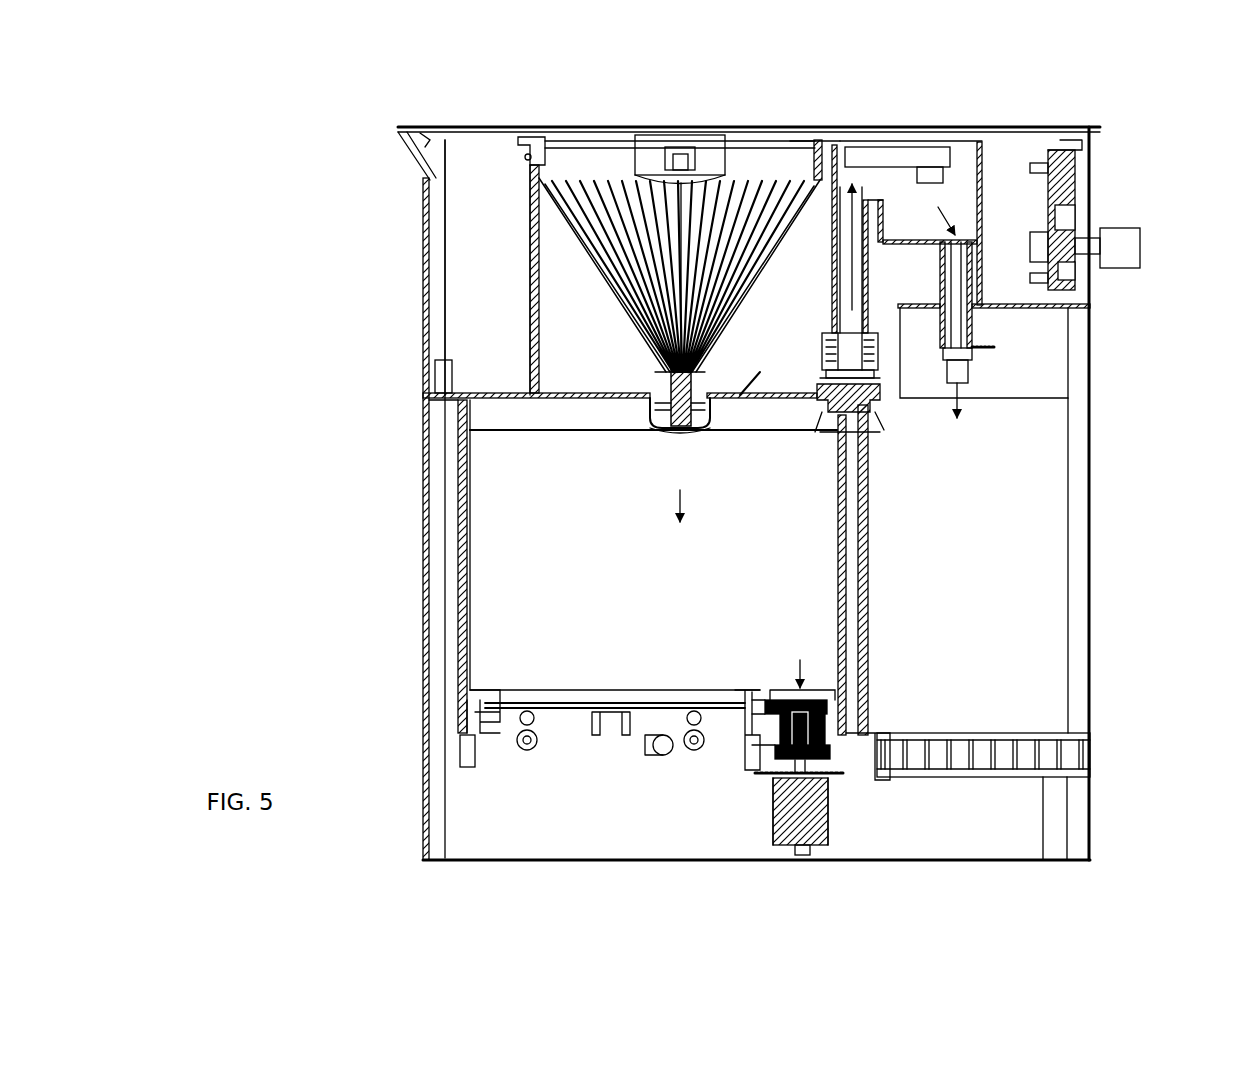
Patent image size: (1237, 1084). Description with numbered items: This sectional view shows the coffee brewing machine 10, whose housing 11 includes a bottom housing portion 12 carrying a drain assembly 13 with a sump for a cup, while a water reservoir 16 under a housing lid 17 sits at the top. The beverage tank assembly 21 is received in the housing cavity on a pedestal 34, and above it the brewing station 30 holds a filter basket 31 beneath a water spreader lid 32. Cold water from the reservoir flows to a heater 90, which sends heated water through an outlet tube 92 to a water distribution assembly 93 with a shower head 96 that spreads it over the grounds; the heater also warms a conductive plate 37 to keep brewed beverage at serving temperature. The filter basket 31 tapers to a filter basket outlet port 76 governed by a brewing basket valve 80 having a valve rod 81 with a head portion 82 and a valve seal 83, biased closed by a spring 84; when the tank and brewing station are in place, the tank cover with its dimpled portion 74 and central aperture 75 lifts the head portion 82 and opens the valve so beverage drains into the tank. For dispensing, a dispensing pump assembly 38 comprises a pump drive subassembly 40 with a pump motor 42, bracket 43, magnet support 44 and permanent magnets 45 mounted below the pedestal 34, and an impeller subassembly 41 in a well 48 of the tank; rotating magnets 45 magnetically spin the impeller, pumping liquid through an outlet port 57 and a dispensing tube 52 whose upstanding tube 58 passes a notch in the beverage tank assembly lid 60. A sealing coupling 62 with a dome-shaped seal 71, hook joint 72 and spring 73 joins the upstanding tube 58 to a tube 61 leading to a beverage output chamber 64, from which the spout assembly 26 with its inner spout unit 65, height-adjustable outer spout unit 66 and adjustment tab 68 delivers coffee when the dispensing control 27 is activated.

The coffee brewing machine 10 is at (1048, 104).
The housing 11 is at (1030, 495).
The bottom housing portion 12 is at (1092, 818).
The drain assembly 13 is at (1085, 750).
The water reservoir 16 is at (485, 300).
The housing lid 17 is at (480, 127).
The beverage tank assembly 21 is at (520, 548).
The spout assembly 26 is at (970, 380).
The dispensing control 27 is at (1135, 250).
The brewing station 30 is at (500, 200).
The filter basket 31 is at (545, 245).
The water spreader lid 32 is at (570, 139).
The pedestal 34 is at (466, 690).
The conductive plate 37 is at (568, 700).
The dispensing pump assembly 38 is at (732, 830).
The pump drive subassembly 40 is at (850, 822).
The impeller subassembly 41 is at (833, 688).
The pump motor 42 is at (805, 790).
The bracket 43 is at (770, 776).
The magnet support 44 is at (815, 790).
The permanent magnets 45 is at (770, 745).
The well 48 is at (773, 700).
The dispensing tube 52 is at (893, 630).
The outlet port 57 is at (850, 698).
The upstanding tube 58 is at (870, 553).
The beverage tank assembly lid 60 is at (465, 497).
The tube 61 is at (843, 200).
The sealing coupling 62 is at (812, 380).
The beverage output chamber 64 is at (1070, 168).
The inner spout unit 65 is at (985, 322).
The outer spout unit 66 is at (996, 347).
The adjustment tab 68 is at (972, 368).
The dome-shaped seal 71 is at (887, 430).
The hook joint 72 is at (822, 345).
The spring 73 is at (884, 335).
The dimpled portion 74 is at (707, 440).
The central aperture 75 is at (660, 430).
The filter basket outlet port 76 is at (640, 410).
The brewing basket valve 80 is at (580, 432).
The valve rod 81 is at (684, 432).
The head portion 82 is at (663, 432).
The valve seal 83 is at (665, 375).
The spring 84 is at (715, 415).
The heater 90 is at (570, 745).
The outlet tube 92 is at (665, 745).
The water distribution assembly 93 is at (795, 118).
The shower head 96 is at (705, 150).